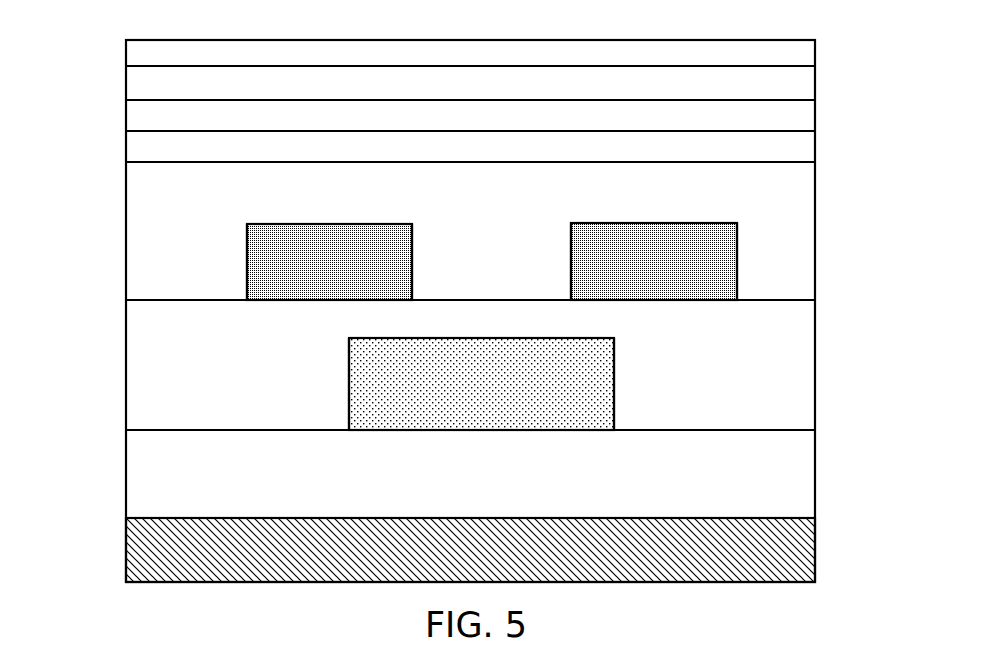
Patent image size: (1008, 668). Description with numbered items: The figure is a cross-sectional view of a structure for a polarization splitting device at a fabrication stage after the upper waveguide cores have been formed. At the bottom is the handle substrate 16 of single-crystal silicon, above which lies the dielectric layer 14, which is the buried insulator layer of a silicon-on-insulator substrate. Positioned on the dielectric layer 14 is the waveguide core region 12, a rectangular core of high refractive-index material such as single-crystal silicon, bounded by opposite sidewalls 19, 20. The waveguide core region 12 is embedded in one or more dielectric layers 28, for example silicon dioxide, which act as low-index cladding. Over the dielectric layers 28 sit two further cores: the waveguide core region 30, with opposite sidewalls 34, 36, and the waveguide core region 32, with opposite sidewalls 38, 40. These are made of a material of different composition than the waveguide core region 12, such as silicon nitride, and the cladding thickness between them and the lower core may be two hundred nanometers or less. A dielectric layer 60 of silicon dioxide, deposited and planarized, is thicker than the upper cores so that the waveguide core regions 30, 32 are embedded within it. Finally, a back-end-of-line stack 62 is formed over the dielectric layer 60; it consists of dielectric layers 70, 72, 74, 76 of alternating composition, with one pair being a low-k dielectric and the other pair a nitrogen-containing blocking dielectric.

The back-end-of-line stack 62 is at (113, 45).
The dielectric layer 76 is at (778, 62).
The dielectric layer 74 is at (786, 87).
The dielectric layer 72 is at (786, 119).
The dielectric layer 70 is at (795, 145).
The dielectric layer 60 is at (158, 200).
The waveguide core region 30 is at (270, 278).
The sidewall 34 is at (247, 258).
The sidewall 36 is at (412, 275).
The waveguide core region 32 is at (690, 275).
The sidewall 38 is at (571, 245).
The sidewall 40 is at (737, 253).
The dielectric layers 28 is at (793, 363).
The waveguide core region 12 is at (420, 367).
The sidewall 19 is at (349, 395).
The sidewall 20 is at (614, 380).
The dielectric layer 14 is at (795, 487).
The handle substrate 16 is at (795, 547).